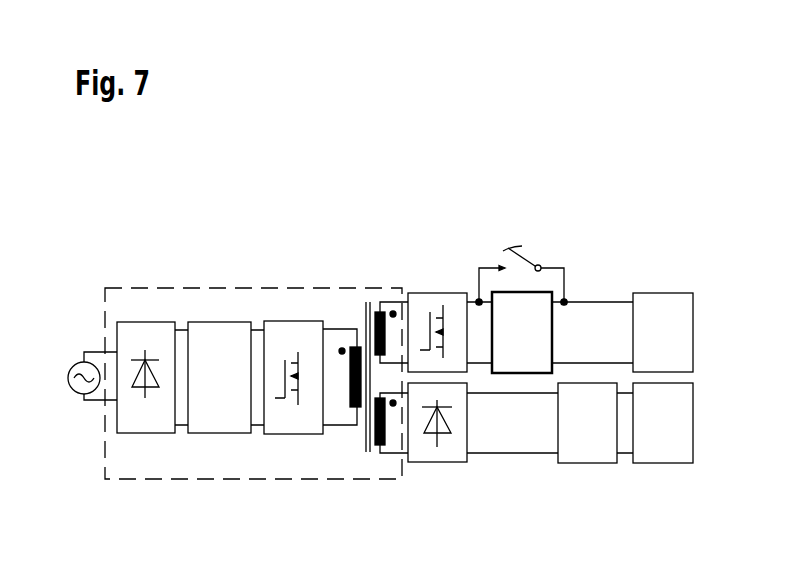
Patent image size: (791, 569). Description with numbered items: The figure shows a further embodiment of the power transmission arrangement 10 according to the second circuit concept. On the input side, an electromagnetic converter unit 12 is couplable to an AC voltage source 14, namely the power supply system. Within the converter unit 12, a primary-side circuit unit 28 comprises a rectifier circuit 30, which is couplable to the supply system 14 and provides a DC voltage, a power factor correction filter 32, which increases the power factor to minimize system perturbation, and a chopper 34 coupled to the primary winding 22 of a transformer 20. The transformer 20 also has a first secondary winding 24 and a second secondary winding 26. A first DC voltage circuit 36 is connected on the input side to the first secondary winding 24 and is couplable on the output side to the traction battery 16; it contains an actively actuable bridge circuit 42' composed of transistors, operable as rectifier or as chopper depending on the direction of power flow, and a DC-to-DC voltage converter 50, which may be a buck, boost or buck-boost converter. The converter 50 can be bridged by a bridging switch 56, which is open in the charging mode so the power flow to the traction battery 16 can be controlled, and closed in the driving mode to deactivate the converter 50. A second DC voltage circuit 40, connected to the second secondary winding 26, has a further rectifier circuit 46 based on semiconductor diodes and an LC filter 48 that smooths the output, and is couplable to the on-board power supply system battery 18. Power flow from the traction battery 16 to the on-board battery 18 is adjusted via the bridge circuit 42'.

The power transmission arrangement 10 is at (481, 203).
The electromagnetic converter unit 12 is at (145, 481).
The AC voltage source 14 is at (70, 358).
The traction battery 16 is at (660, 297).
The on-board power supply system battery 18 is at (660, 463).
The transformer 20 is at (344, 272).
The primary winding 22 is at (347, 388).
The first secondary winding 24 is at (363, 300).
The second secondary winding 26 is at (367, 443).
The primary-side circuit unit 28 is at (221, 272).
The rectifier circuit 30 is at (140, 327).
The power factor correction filter 32 is at (220, 433).
The chopper 34 is at (281, 434).
The first DC voltage circuit 36 is at (561, 250).
The second DC voltage circuit 40 is at (536, 475).
The actively actuable bridge circuit 42' is at (437, 292).
The further rectifier circuit 46 is at (437, 462).
The LC filter 48 is at (585, 463).
The DC-to-DC voltage converter 50 is at (545, 330).
The bridging switch 56 is at (514, 260).